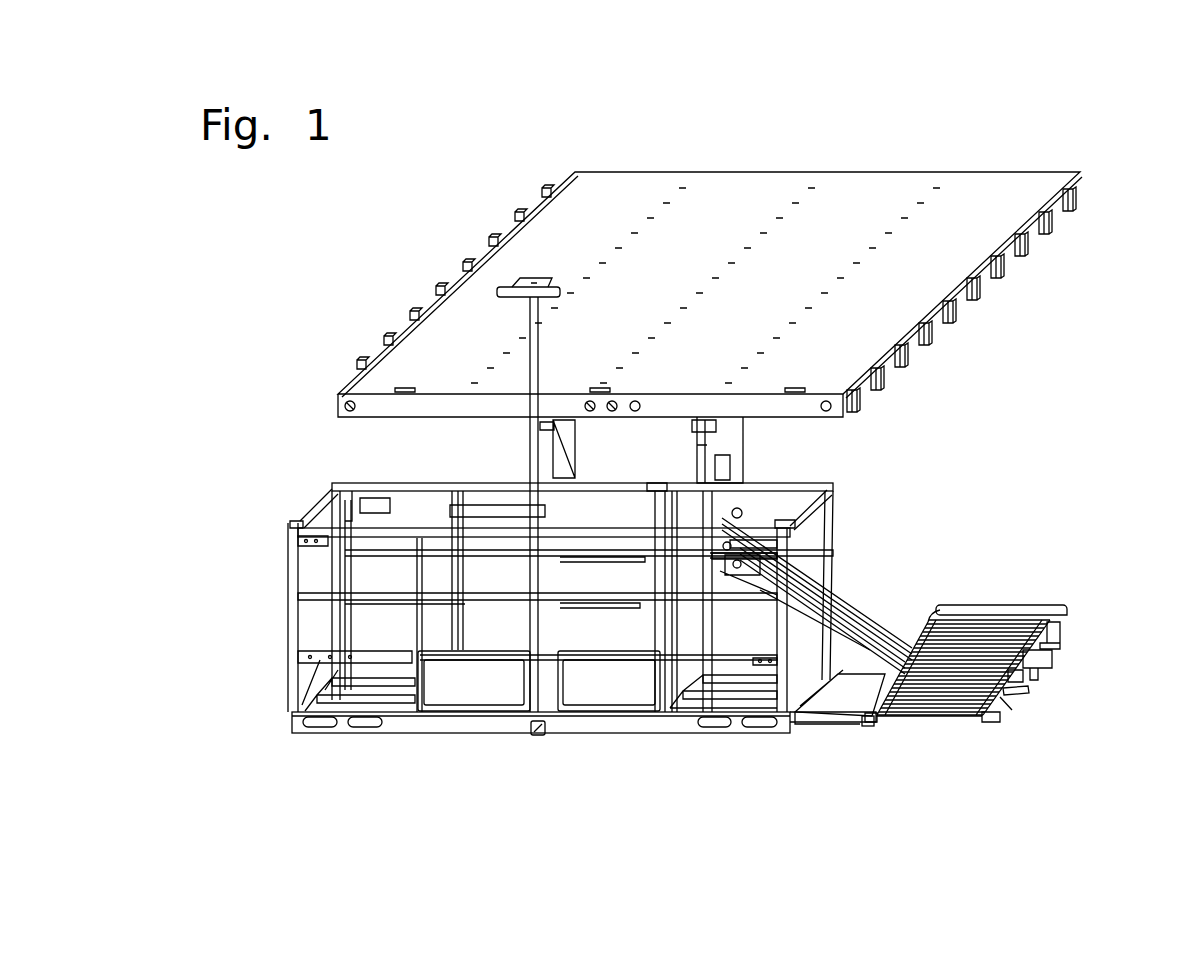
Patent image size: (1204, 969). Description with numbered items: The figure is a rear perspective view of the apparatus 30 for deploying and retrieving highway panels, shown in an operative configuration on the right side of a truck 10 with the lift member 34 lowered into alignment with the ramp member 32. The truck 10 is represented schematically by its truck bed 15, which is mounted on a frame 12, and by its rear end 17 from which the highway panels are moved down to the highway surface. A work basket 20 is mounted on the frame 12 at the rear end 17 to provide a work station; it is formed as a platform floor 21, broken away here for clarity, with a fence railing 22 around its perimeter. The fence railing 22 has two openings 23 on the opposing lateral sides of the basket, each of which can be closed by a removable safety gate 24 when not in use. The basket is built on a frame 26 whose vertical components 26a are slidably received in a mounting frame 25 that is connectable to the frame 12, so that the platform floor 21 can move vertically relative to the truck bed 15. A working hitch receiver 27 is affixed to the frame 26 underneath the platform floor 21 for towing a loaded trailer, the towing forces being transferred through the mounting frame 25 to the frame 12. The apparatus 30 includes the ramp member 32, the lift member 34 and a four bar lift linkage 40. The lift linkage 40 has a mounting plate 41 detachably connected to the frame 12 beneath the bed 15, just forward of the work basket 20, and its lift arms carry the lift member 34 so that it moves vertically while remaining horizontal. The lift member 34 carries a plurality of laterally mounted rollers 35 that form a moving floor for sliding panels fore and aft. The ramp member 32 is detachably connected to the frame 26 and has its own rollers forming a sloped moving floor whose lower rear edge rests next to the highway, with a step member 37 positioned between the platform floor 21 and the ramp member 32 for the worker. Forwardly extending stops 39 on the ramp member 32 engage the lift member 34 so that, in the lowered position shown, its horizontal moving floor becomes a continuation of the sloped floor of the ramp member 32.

The truck 10 is at (1010, 160).
The frame 12 is at (725, 447).
The truck bed 15 is at (583, 227).
The rear end 17 is at (490, 440).
The work basket 20 is at (293, 745).
The platform floor 21 is at (400, 687).
The fence railing 22 is at (382, 535).
The openings 23 is at (298, 500).
The removable safety gate 24 is at (330, 497).
The mounting frame 25 is at (482, 474).
The frame 26 is at (290, 720).
The vertical components 26a is at (495, 515).
The hitch receiver 27 is at (538, 738).
The apparatus 30 is at (1055, 548).
The ramp member 32 is at (1012, 692).
The lift member 34 is at (1055, 630).
The rollers 35 is at (1000, 613).
The step member 37 is at (835, 708).
The stops 39 is at (1025, 668).
The four bar lift linkage 40 is at (853, 595).
The mounting plate 41 is at (730, 510).